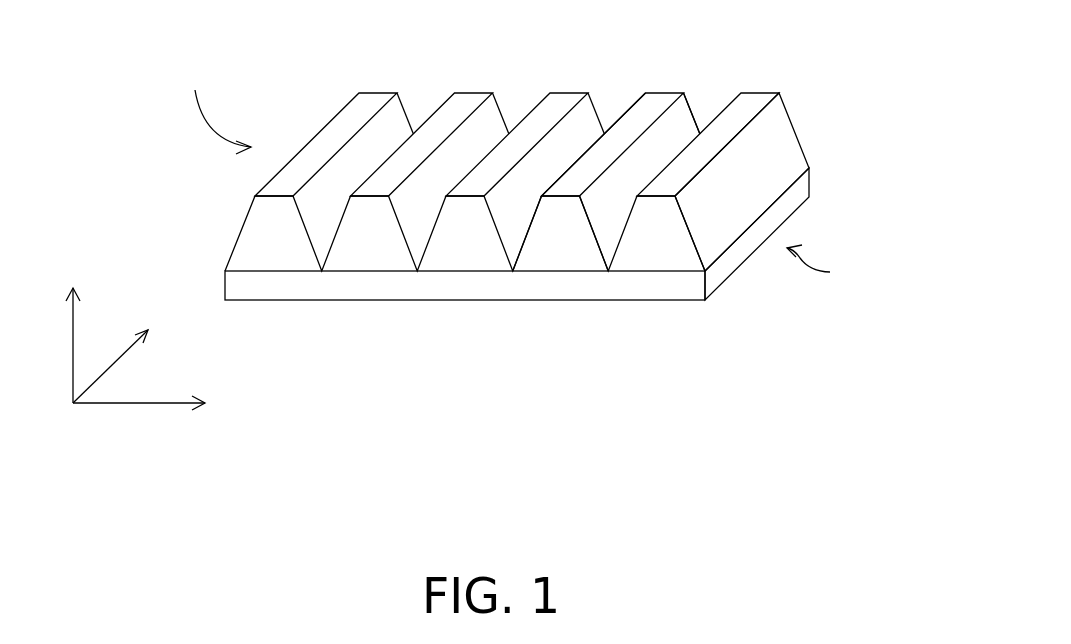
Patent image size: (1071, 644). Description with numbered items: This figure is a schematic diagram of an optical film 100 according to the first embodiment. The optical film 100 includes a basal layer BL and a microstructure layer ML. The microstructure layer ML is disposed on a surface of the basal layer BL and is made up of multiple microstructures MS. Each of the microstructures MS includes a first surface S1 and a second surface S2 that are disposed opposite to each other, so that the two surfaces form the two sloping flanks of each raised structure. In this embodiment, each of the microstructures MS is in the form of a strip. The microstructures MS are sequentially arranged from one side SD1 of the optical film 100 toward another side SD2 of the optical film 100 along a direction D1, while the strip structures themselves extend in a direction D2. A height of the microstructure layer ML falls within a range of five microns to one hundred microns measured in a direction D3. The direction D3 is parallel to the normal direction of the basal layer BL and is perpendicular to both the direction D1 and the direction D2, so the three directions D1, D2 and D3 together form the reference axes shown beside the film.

The optical film 100 is at (970, 395).
The basal layer BL is at (687, 290).
The microstructure layer ML is at (581, 143).
The microstructures MS is at (783, 130).
The first surface S1 is at (682, 123).
The second surface S2 is at (626, 110).
The side SD1 is at (211, 102).
The another side SD2 is at (841, 269).
The direction D1 is at (158, 403).
The direction D2 is at (130, 353).
The direction D3 is at (70, 327).